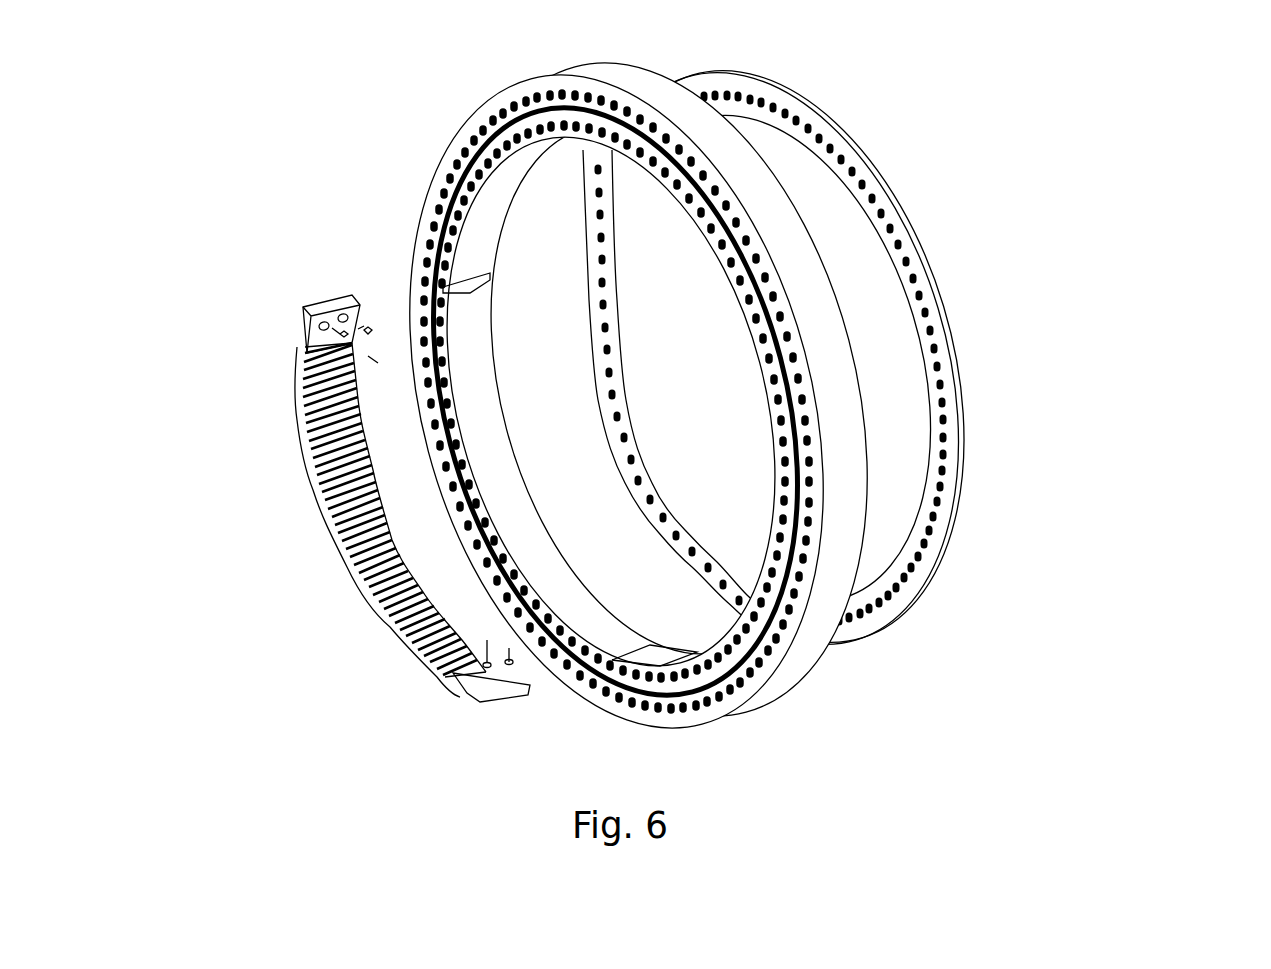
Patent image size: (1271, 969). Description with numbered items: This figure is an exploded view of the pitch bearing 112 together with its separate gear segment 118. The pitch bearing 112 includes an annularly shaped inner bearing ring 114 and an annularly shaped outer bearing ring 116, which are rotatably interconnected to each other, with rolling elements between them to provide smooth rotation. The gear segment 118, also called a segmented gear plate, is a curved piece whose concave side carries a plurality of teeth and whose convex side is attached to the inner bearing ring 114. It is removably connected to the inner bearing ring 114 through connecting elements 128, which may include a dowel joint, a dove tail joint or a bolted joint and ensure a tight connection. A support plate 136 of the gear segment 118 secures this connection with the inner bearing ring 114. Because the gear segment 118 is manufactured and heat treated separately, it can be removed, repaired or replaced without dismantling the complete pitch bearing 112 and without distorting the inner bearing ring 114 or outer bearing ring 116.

The pitch bearing 112 is at (1090, 144).
The inner bearing ring 114 is at (470, 185).
The outer bearing ring 116 is at (412, 219).
The gear segment 118 is at (320, 549).
The connecting elements 128 is at (288, 321).
The support plate 136 is at (922, 242).